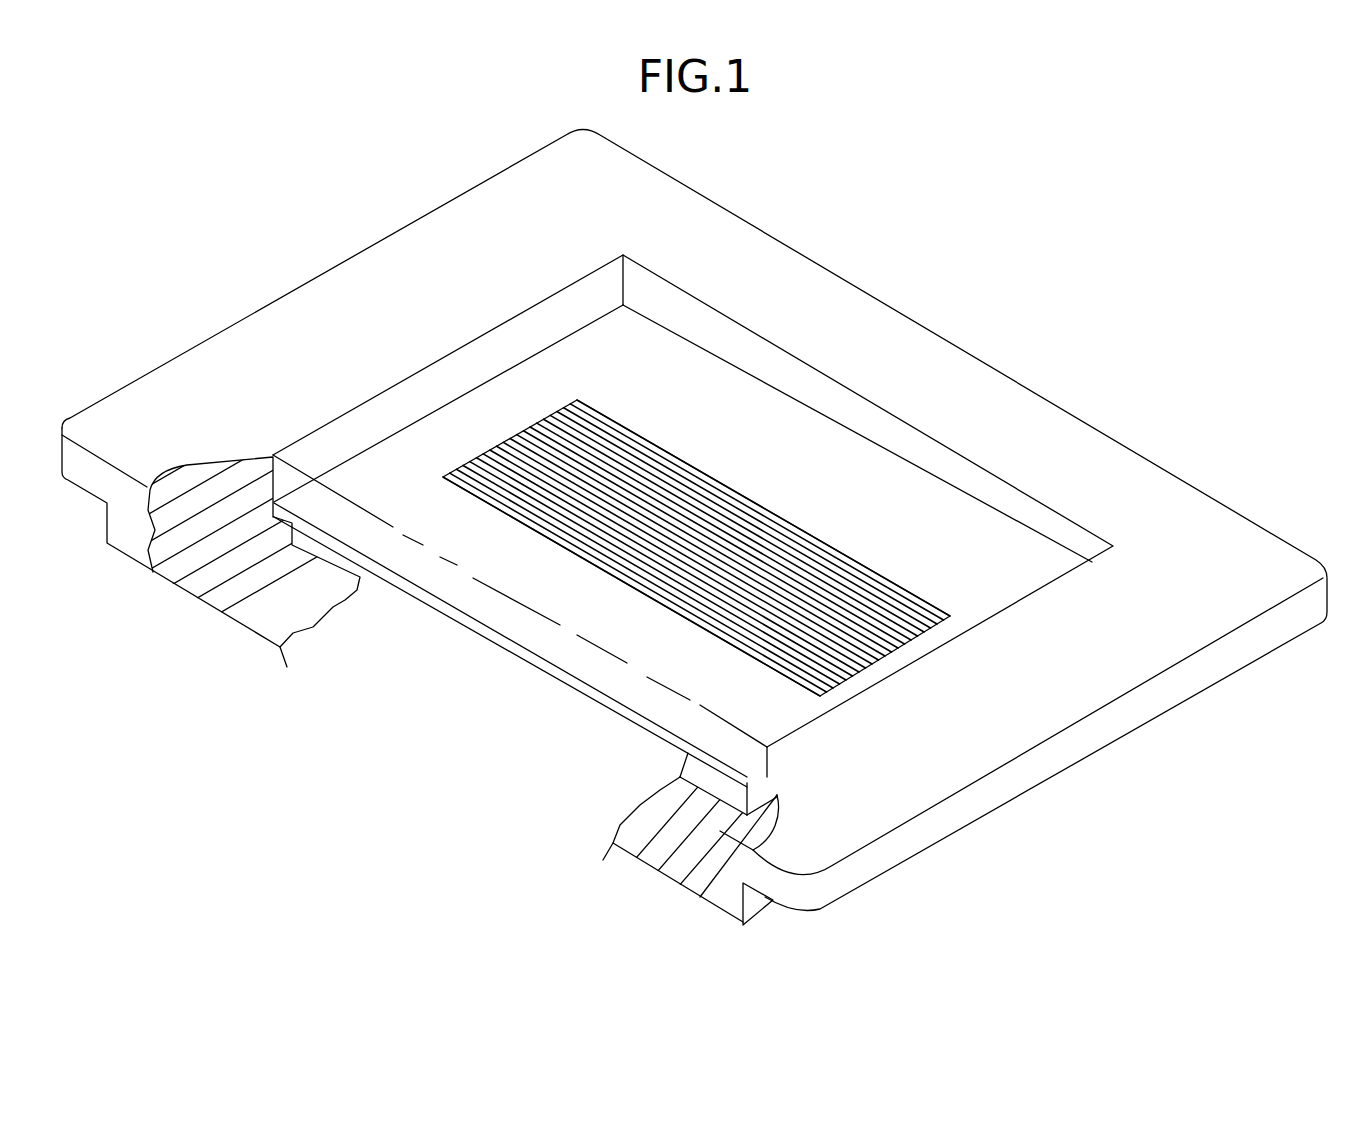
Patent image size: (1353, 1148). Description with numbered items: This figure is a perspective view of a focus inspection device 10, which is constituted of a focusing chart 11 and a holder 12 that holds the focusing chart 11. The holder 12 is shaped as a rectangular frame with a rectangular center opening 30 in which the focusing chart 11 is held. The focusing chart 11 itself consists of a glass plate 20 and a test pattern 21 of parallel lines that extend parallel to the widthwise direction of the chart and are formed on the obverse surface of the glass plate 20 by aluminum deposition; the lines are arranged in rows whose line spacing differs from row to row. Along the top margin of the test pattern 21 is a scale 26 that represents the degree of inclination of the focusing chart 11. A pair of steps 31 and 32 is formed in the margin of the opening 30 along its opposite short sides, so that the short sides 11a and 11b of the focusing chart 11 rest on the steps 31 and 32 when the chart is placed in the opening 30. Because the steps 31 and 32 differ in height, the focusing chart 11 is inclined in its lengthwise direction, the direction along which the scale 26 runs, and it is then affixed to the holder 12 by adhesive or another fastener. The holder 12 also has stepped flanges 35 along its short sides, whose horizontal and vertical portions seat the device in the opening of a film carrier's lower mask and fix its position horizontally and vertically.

The focus inspection device 10 is at (898, 302).
The focusing chart 11 is at (384, 674).
The short side of focusing chart 11a is at (470, 372).
The short side of focusing chart 11b is at (770, 782).
The holder 12 is at (272, 338).
The glass plate 20 is at (550, 652).
The test pattern 21 is at (540, 542).
The scale 26 is at (880, 528).
The rectangular center opening 30 is at (753, 353).
The step 31 is at (278, 528).
The step 32 is at (690, 755).
The stepped flange 35 is at (88, 495).